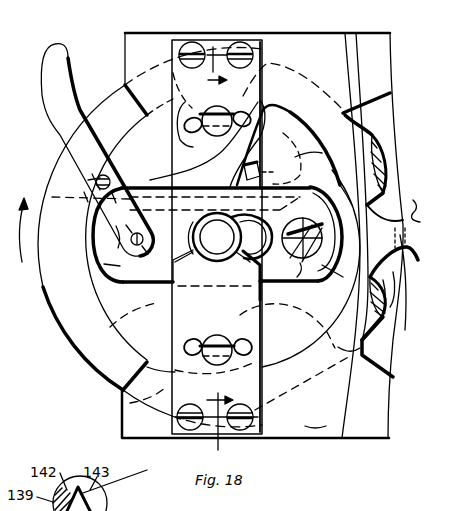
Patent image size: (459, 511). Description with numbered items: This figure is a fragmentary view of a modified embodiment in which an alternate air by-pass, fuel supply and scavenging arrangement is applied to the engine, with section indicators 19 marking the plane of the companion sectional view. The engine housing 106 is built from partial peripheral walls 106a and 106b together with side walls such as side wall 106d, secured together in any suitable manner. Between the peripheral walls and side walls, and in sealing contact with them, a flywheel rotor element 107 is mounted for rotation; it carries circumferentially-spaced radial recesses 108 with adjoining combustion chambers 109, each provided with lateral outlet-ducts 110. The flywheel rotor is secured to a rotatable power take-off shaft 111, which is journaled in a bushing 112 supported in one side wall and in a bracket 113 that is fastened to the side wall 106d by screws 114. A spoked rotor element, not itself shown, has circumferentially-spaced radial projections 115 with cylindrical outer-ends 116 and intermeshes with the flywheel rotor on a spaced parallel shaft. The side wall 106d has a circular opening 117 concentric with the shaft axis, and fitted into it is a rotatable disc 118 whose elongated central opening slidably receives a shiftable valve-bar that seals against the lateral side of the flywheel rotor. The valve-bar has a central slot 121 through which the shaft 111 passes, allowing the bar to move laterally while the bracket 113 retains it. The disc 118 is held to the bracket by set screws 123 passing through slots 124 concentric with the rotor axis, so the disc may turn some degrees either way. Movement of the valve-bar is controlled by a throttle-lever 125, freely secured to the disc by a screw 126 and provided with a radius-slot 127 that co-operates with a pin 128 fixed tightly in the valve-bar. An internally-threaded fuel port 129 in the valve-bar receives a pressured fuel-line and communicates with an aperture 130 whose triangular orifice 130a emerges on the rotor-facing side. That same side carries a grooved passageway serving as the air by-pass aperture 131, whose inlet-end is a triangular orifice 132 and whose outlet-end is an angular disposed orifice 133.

The section line 19- 19 is at (210, 240).
The engine housing 106 is at (332, 38).
The partial peripheral wall 106a is at (348, 90).
The partial peripheral wall 106b is at (334, 116).
The side wall 106d is at (320, 419).
The flywheel rotor element 107 is at (370, 338).
The radial recesses 108 is at (46, 293).
The combustion chambers 109 is at (303, 153).
The lateral outlet-ducts 110 is at (295, 163).
The power take-off shaft 111 is at (214, 237).
The bushing 112 is at (205, 262).
The bracket 113 is at (258, 42).
The screws 114 is at (227, 28).
The radial projections 115 is at (415, 215).
The cylindrical outer-ends 116 is at (396, 299).
The circular opening 117 is at (160, 368).
The rotatable disc 118 is at (264, 112).
The central slot 121 is at (250, 259).
The set screws 123 is at (219, 137).
The slots 124 is at (183, 125).
The throttle-lever 125 is at (68, 144).
The screw 126 is at (99, 173).
The radius-slot 127 is at (112, 237).
The pin 128 is at (113, 257).
The fuel port 129 is at (301, 285).
The aperture 130 is at (297, 257).
The triangular orifice 130a is at (283, 273).
The air by-pass aperture 131 is at (152, 233).
The triangular orifice 132 is at (252, 237).
The angular disposed orifice 133 is at (164, 186).